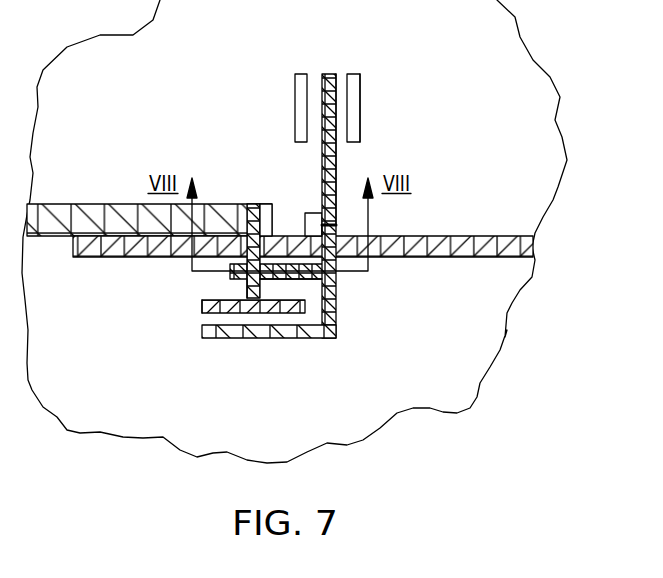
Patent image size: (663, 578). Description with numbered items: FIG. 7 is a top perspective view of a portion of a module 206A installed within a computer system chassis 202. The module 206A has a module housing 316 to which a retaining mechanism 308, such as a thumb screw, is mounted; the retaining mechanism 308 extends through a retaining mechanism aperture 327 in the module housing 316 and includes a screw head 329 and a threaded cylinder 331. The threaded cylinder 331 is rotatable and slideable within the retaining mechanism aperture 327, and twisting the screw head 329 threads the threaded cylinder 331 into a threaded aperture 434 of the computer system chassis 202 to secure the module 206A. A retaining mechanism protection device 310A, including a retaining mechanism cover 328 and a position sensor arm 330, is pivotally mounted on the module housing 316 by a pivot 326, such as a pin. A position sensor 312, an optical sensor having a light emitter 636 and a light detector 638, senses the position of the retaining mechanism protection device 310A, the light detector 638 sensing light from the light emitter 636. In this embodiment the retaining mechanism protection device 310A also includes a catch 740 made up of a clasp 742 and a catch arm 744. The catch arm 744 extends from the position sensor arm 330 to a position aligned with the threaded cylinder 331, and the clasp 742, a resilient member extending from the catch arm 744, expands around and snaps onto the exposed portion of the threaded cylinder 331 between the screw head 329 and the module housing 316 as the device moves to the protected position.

The computer system chassis 202 is at (78, 217).
The module 206A is at (360, 160).
The retaining mechanism 308 is at (181, 307).
The retaining mechanism protection device 310A is at (349, 153).
The position sensor 312 is at (380, 88).
The module housing 316 is at (453, 257).
The pivot 326 is at (336, 228).
The retaining mechanism aperture 327 is at (233, 225).
The retaining mechanism cover 328 is at (291, 339).
The screw head 329 is at (194, 313).
The position sensor arm 330 is at (322, 152).
The threaded cylinder 331 is at (243, 284).
The threaded aperture 434 is at (245, 214).
The light emitter 636 is at (302, 73).
The light detector 638 is at (353, 73).
The catch 740 is at (292, 251).
The clasp 742 is at (231, 266).
The catch arm 744 is at (302, 282).